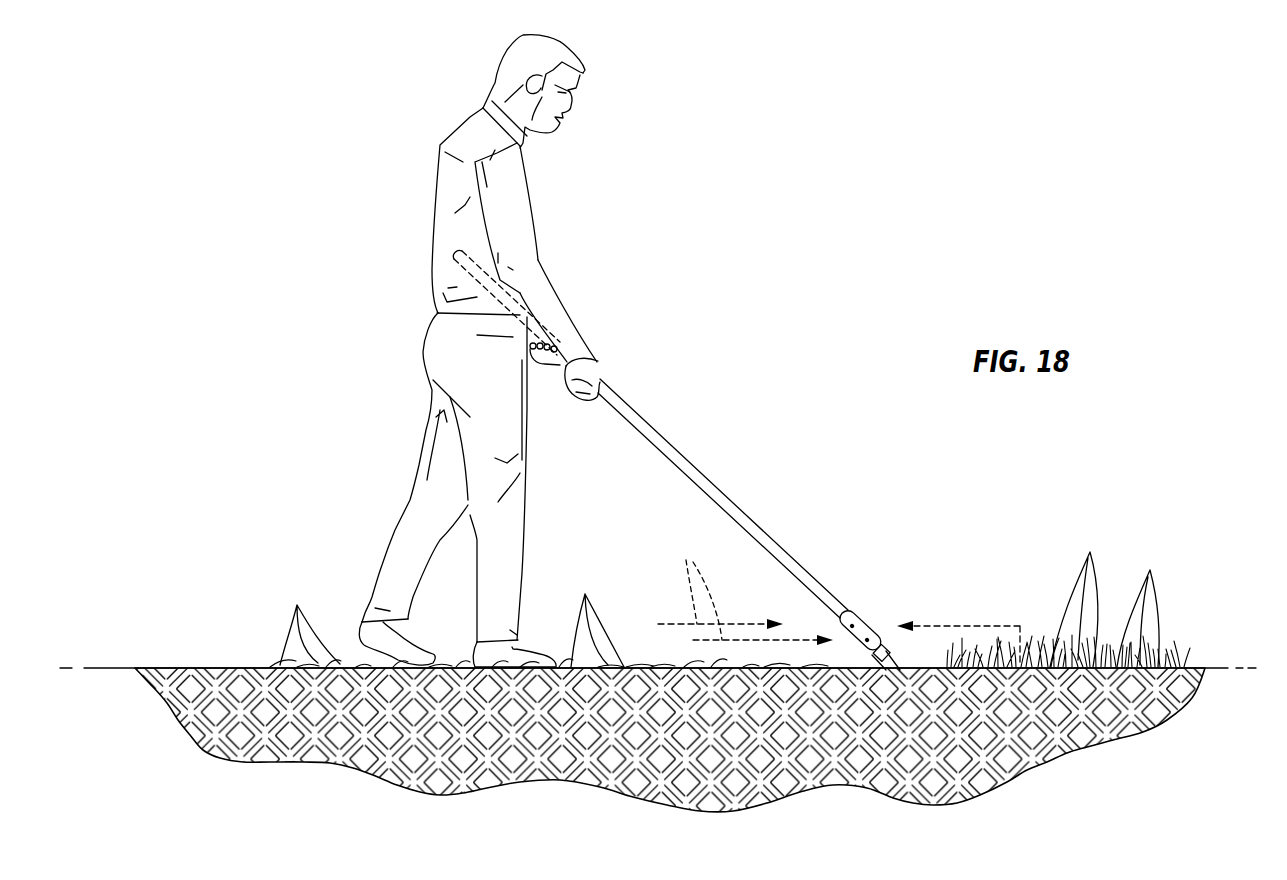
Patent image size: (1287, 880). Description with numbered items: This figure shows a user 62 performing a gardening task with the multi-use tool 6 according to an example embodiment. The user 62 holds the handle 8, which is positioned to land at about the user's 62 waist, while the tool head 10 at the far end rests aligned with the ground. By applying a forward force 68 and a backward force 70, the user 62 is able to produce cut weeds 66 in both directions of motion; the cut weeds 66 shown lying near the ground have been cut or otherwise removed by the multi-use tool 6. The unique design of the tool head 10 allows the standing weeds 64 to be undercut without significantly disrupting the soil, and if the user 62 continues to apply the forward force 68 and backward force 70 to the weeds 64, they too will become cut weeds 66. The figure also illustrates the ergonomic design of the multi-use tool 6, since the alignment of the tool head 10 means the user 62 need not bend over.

The multi-use tool 6 is at (786, 290).
The handle 8 is at (641, 425).
The tool head 10 is at (902, 659).
The user 62 is at (445, 180).
The weeds 64 is at (1107, 597).
The cut weeds 66 is at (452, 617).
The forward force 68 is at (745, 591).
The backward force 70 is at (947, 623).